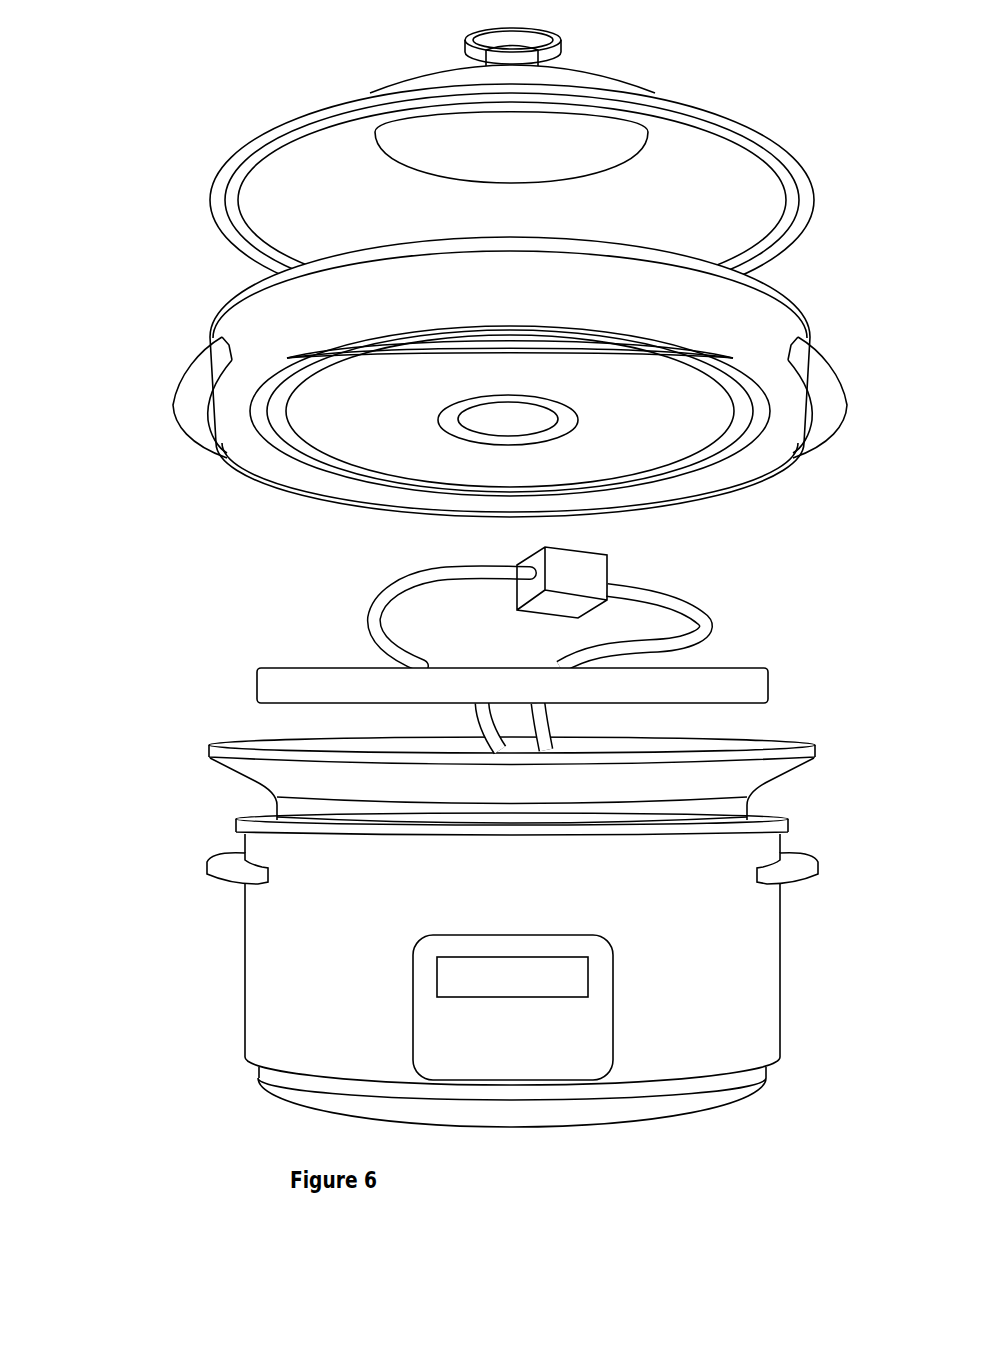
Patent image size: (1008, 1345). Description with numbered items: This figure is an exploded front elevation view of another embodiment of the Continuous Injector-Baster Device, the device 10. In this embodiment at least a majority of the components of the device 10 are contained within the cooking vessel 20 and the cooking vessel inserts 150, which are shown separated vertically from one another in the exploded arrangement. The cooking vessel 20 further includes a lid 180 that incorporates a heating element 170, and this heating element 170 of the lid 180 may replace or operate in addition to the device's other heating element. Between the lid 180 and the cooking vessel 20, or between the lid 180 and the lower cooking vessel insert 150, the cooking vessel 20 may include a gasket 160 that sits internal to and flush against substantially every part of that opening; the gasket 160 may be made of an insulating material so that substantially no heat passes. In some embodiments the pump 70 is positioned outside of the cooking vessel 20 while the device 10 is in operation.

The device 10 is at (464, 577).
The cooking vessel 20 is at (245, 948).
The pump 70 is at (593, 566).
The cooking vessel insert 150 is at (275, 773).
The gasket 160 is at (743, 683).
The heating element 170 is at (280, 422).
The lid 180 is at (240, 308).